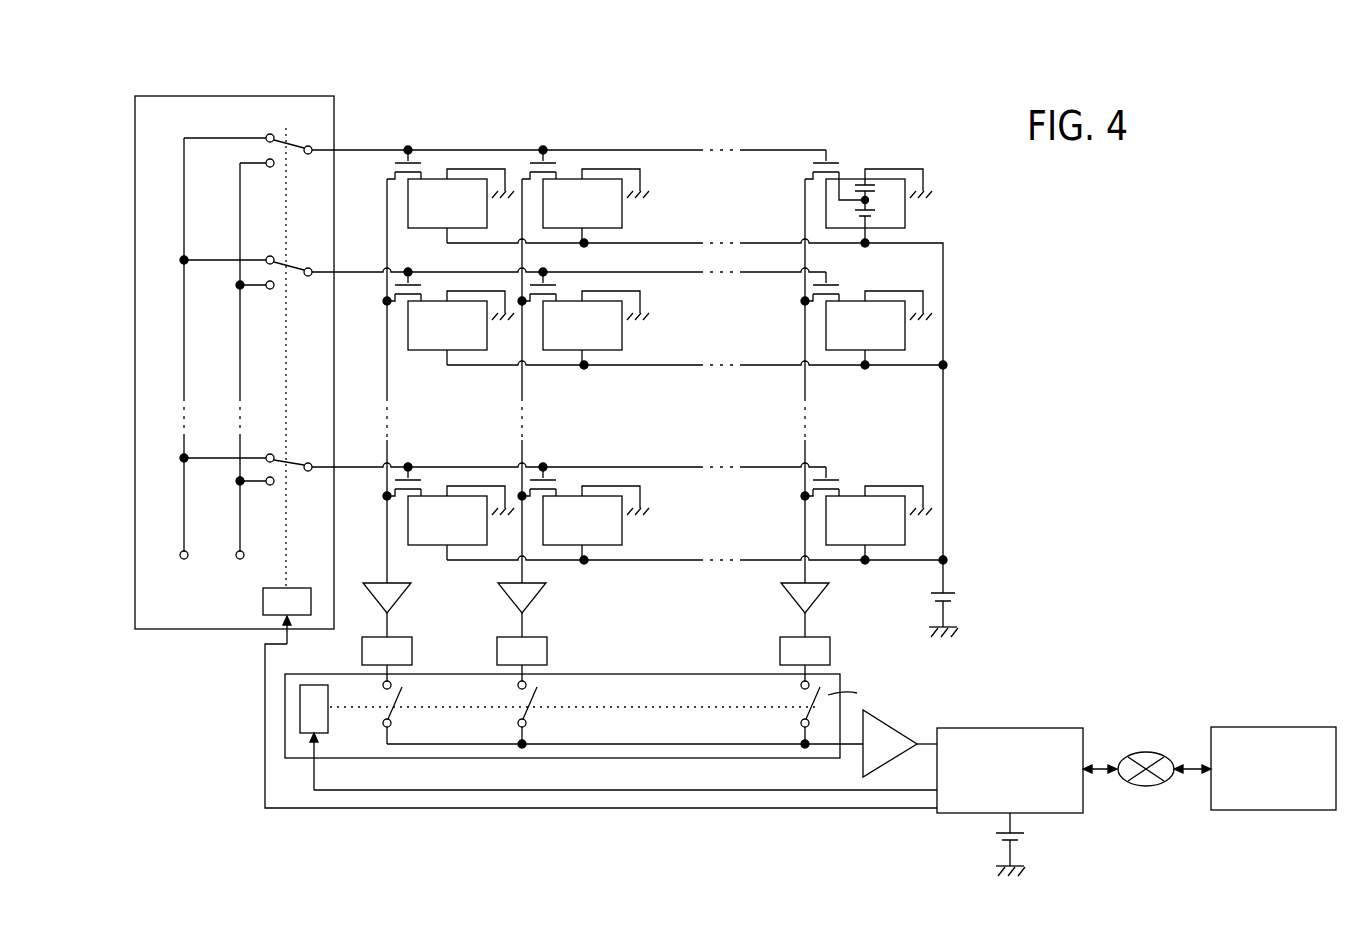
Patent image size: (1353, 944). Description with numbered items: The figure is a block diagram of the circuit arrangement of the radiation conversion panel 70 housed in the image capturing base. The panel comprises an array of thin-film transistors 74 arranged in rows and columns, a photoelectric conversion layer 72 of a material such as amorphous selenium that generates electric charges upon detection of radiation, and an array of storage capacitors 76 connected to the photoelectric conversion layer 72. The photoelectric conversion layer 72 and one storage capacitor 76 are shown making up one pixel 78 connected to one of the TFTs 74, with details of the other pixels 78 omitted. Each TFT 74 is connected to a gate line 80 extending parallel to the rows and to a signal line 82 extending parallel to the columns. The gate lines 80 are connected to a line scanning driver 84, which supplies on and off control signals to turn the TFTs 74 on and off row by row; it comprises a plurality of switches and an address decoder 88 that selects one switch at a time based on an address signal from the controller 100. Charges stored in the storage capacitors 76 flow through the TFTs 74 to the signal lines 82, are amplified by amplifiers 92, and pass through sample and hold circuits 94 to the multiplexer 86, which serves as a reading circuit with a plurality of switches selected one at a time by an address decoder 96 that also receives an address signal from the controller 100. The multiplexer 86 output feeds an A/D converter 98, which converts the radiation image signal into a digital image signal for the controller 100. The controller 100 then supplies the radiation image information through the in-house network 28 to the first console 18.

The first console 18 is at (1318, 728).
The in-house network 28 is at (1143, 752).
The radiation conversion panel 70 is at (820, 120).
The photoelectric conversion layer 72 is at (877, 212).
The thin-film transistor 74 is at (813, 161).
The storage capacitor 76 is at (878, 188).
The pixel 78 is at (624, 220).
The gate line 80 is at (762, 148).
The signal line 82 is at (804, 199).
The line scanning driver 84 is at (134, 136).
The multiplexer 86 is at (703, 673).
The address decoder 88 is at (262, 604).
The amplifier 92 is at (543, 598).
The sample and hold circuit 94 is at (549, 653).
The address decoder 96 is at (329, 712).
The A/D converter 98 is at (898, 733).
The controller 100 is at (1063, 728).